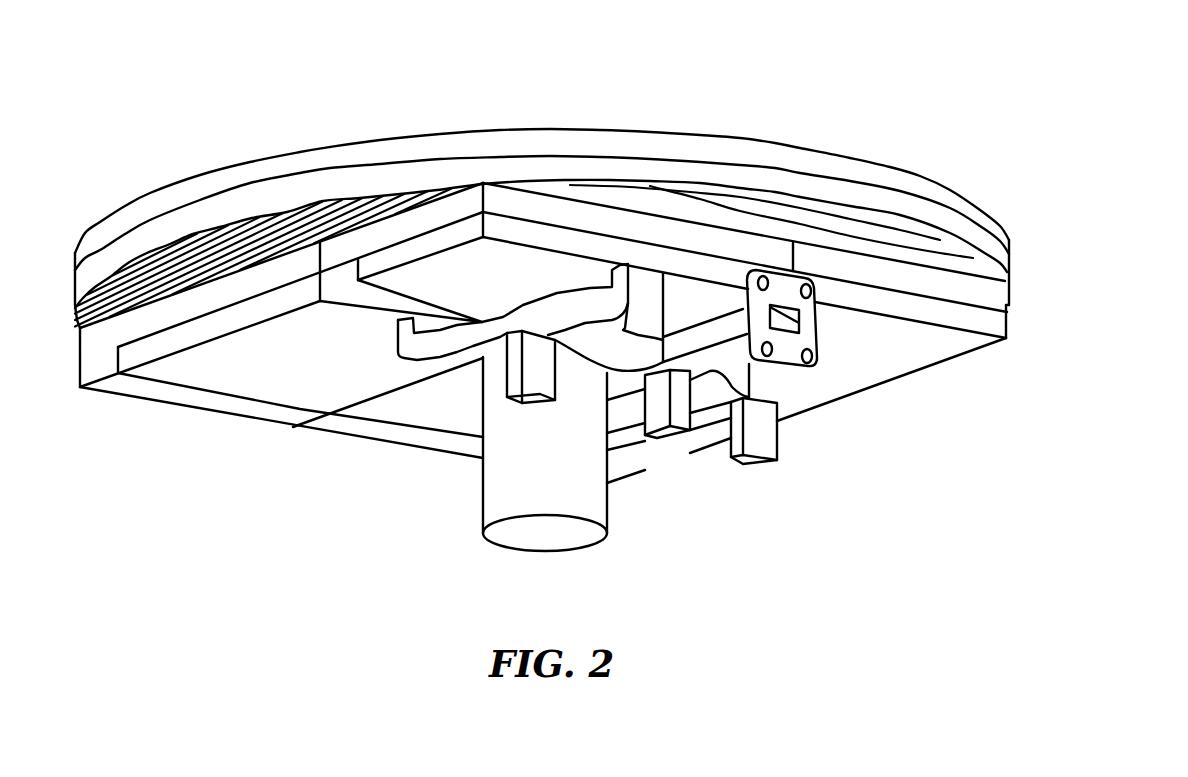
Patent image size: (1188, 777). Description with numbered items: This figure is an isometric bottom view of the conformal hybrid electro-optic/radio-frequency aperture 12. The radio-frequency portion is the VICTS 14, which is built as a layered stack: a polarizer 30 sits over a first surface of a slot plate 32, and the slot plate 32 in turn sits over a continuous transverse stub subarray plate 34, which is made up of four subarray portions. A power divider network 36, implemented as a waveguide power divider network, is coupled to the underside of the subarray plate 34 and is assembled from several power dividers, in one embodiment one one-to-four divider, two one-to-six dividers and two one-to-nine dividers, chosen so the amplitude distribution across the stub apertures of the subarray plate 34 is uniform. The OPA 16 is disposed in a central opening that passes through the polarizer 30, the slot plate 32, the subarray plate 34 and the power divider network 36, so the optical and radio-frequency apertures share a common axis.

The antenna assembly 12 is at (902, 104).
The VICTS 14 is at (627, 306).
The OPA 16 is at (582, 490).
The polarizer 30 is at (1003, 239).
The slot plate 32 is at (1003, 267).
The continuous transverse stub (CTS) subarray plate 34 is at (1097, 213).
The power divider network 36 is at (777, 440).